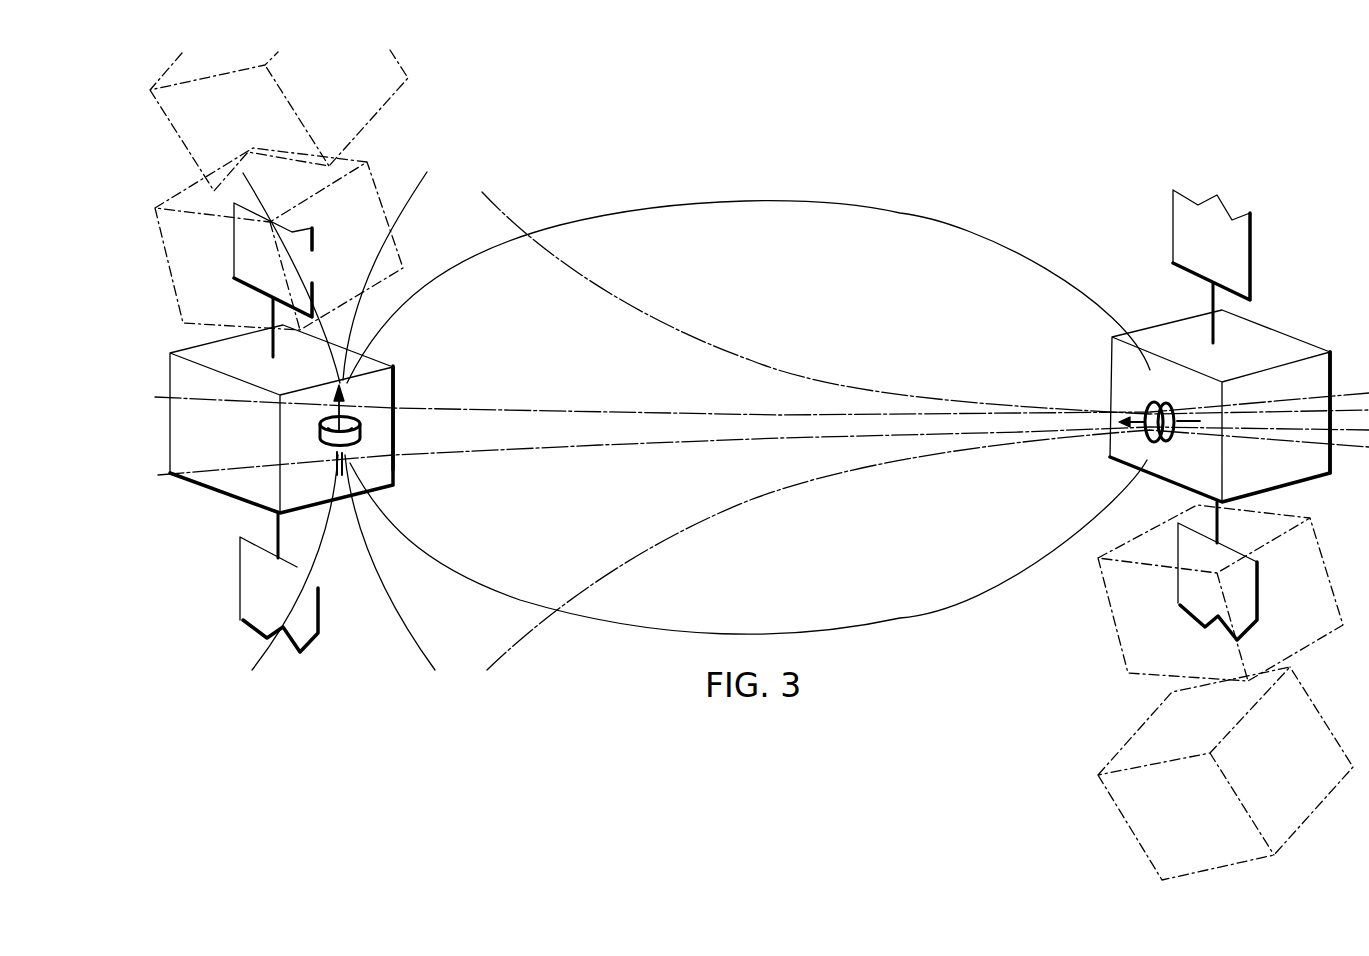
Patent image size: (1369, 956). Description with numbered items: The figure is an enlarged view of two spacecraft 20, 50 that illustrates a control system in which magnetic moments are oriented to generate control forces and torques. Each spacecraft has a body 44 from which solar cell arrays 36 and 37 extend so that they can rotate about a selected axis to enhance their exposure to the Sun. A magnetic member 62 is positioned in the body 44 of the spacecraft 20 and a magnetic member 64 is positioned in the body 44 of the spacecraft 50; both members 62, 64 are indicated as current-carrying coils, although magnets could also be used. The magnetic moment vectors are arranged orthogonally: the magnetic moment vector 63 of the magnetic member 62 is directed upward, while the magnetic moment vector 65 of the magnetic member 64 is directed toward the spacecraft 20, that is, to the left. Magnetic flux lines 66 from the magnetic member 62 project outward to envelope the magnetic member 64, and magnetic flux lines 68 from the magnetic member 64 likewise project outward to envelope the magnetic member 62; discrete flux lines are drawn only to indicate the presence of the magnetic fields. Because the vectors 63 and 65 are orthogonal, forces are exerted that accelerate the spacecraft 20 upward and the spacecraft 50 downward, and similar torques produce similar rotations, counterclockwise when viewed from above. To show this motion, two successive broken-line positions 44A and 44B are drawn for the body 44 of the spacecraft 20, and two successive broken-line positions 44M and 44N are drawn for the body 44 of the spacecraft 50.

The spacecraft 20 is at (285, 394).
The solar cell array 36 is at (313, 230).
The solar cell array 37 is at (322, 607).
The spacecraft body 44 is at (393, 467).
The broken-line position 44A is at (403, 258).
The broken-line position 44B is at (383, 114).
The broken-line position 44M is at (1107, 620).
The broken-line position 44N is at (1108, 792).
The spacecraft 50 is at (1206, 374).
The magnetic member 62 is at (363, 428).
The magnetic moment vector 63 is at (343, 400).
The magnetic member 64 is at (1148, 402).
The magnetic moment vector 65 is at (1142, 415).
The magnetic flux lines 66 is at (696, 421).
The magnetic flux lines 68 is at (762, 431).